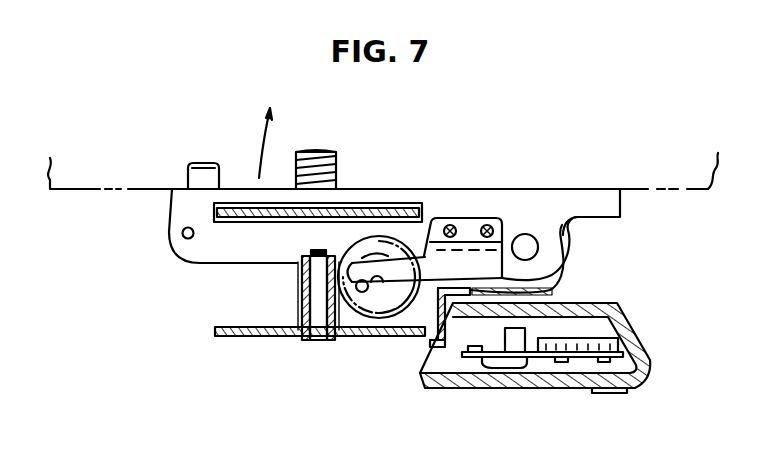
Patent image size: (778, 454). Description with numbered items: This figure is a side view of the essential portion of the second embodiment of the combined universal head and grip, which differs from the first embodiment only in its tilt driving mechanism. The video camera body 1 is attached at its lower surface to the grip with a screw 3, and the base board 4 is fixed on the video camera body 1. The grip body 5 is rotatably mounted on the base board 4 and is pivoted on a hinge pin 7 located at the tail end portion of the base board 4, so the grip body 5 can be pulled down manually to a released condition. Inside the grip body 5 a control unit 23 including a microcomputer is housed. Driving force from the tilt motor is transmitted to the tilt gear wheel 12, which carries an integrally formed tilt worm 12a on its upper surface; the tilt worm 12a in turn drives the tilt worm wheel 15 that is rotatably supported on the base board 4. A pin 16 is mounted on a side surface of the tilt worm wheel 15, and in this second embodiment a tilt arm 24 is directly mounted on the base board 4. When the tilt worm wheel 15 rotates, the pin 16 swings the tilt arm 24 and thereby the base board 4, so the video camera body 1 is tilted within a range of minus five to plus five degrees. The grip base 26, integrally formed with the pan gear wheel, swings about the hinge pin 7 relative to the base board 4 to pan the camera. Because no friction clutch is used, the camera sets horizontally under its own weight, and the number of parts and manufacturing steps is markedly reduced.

The video camera body 1 is at (690, 190).
The screw 3 is at (346, 218).
The base board 4 is at (548, 208).
The grip body 5 is at (623, 301).
The hinge pin 7 is at (530, 247).
The tilt gear wheel 12 is at (255, 337).
The tilt worm 12a is at (298, 287).
The tilt worm wheel 15 is at (378, 252).
The pin 16 is at (362, 292).
The control unit 23 is at (600, 338).
The tilt arm 24 is at (428, 252).
The grip base 26 is at (572, 270).